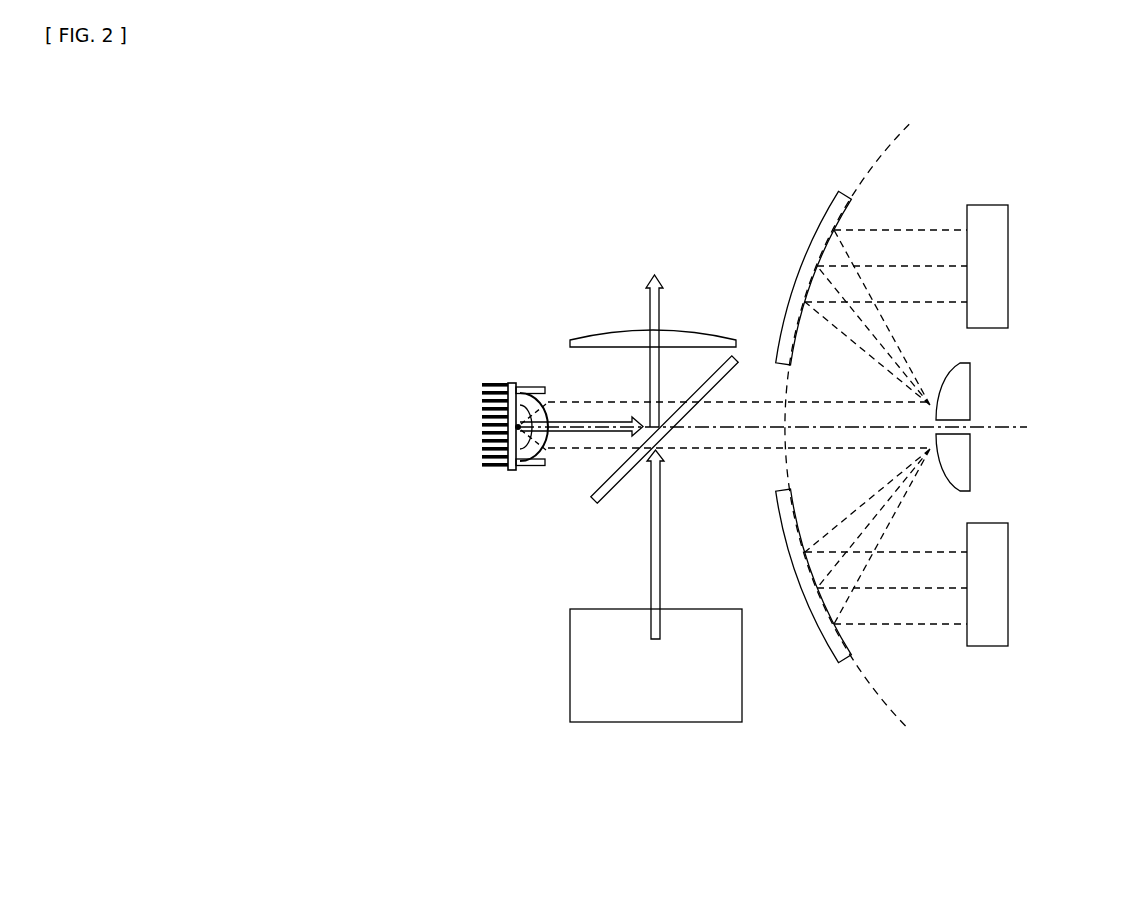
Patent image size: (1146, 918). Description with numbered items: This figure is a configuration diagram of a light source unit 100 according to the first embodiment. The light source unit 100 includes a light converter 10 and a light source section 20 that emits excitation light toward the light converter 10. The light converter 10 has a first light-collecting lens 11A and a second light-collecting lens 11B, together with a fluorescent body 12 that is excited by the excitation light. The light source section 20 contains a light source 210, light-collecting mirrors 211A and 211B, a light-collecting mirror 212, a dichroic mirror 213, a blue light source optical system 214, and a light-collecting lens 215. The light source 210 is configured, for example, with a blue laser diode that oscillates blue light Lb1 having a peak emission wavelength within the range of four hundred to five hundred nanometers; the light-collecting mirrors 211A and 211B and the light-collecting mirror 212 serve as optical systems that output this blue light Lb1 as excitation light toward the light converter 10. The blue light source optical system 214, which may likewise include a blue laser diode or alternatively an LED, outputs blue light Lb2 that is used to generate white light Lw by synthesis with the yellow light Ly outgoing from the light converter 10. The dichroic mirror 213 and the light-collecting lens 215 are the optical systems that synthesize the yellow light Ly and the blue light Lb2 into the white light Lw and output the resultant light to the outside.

The light source unit 100 is at (1036, 140).
The light converter 10 is at (485, 372).
The first light-collecting lens 11A is at (526, 462).
The second light-collecting lens 11B is at (526, 400).
The fluorescent body 12 is at (512, 427).
The light source section 20 is at (1142, 811).
The light source 210 is at (1005, 270).
The light-collecting mirror 211A is at (828, 218).
The light-collecting mirror 211B is at (828, 635).
The light-collecting mirror 212 is at (962, 392).
The dichroic mirror 213 is at (593, 505).
The blue light source optical system 214 is at (656, 724).
The light-collecting lens 215 is at (713, 338).
The yellow light Ly is at (575, 412).
The white light Lw is at (646, 298).
The blue light Lb1 is at (718, 452).
The blue light Lb2 is at (661, 550).